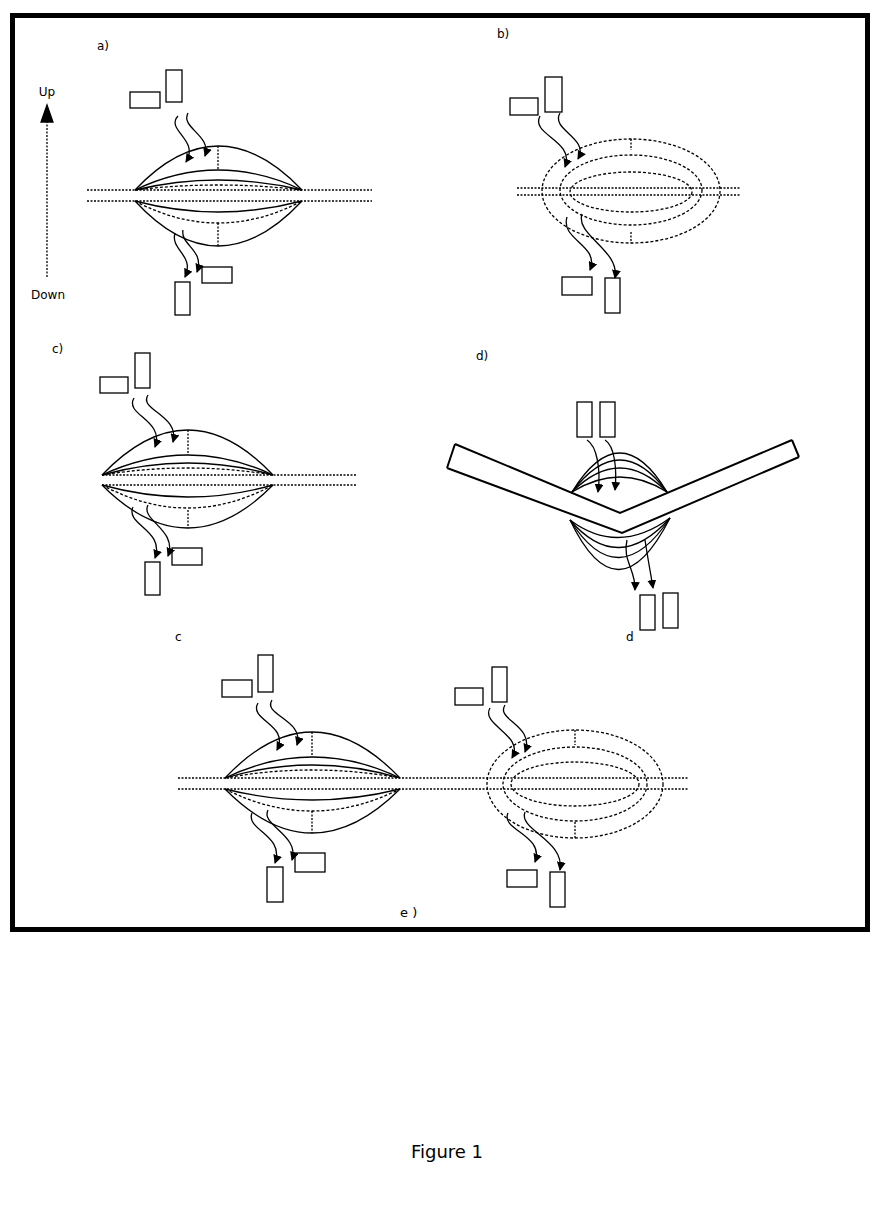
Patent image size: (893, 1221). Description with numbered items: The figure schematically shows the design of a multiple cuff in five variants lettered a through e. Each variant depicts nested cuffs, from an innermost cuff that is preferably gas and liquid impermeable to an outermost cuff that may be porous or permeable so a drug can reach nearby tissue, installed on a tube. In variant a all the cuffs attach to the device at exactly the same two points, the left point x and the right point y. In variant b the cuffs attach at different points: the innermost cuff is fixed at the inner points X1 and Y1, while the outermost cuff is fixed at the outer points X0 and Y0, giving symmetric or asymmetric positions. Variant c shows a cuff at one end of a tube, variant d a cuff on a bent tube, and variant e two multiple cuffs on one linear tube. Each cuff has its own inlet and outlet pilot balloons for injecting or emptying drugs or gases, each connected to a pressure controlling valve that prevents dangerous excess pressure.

The attachment point x is at (127, 176).
The attachment point y is at (316, 214).
The attachment point X0 is at (526, 177).
The attachment point Y0 is at (739, 177).
The attachment point X1 is at (595, 184).
The attachment point Y1 is at (668, 177).